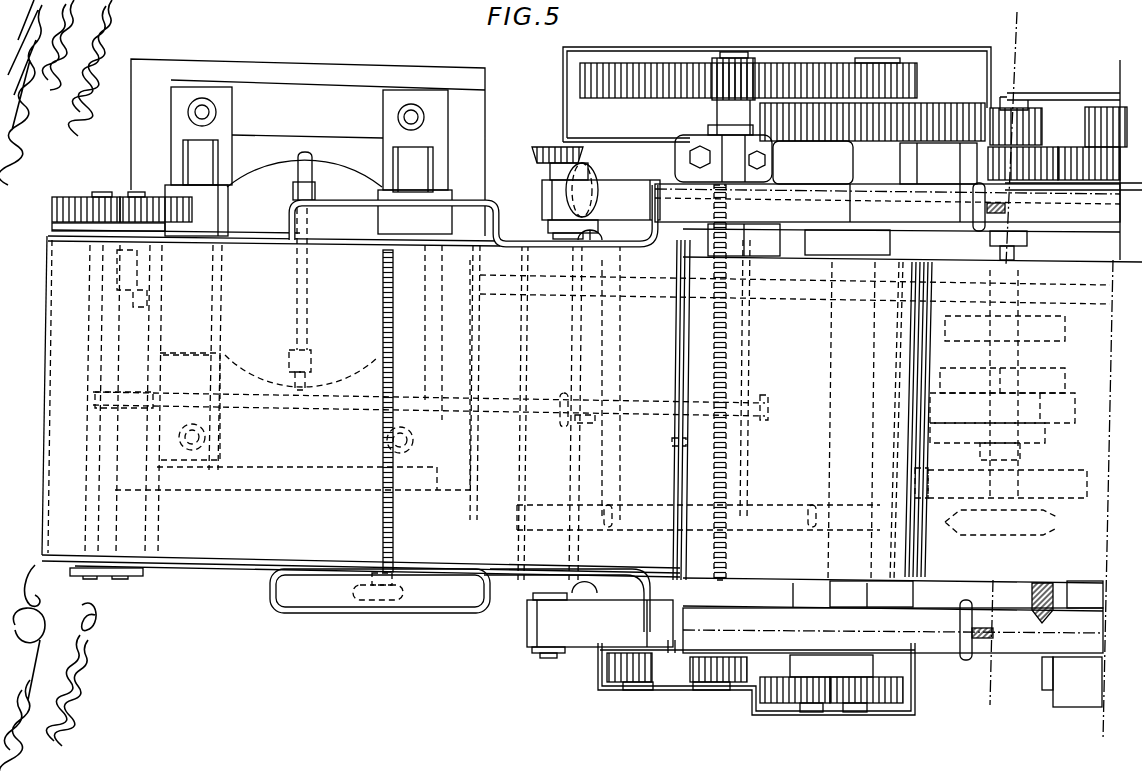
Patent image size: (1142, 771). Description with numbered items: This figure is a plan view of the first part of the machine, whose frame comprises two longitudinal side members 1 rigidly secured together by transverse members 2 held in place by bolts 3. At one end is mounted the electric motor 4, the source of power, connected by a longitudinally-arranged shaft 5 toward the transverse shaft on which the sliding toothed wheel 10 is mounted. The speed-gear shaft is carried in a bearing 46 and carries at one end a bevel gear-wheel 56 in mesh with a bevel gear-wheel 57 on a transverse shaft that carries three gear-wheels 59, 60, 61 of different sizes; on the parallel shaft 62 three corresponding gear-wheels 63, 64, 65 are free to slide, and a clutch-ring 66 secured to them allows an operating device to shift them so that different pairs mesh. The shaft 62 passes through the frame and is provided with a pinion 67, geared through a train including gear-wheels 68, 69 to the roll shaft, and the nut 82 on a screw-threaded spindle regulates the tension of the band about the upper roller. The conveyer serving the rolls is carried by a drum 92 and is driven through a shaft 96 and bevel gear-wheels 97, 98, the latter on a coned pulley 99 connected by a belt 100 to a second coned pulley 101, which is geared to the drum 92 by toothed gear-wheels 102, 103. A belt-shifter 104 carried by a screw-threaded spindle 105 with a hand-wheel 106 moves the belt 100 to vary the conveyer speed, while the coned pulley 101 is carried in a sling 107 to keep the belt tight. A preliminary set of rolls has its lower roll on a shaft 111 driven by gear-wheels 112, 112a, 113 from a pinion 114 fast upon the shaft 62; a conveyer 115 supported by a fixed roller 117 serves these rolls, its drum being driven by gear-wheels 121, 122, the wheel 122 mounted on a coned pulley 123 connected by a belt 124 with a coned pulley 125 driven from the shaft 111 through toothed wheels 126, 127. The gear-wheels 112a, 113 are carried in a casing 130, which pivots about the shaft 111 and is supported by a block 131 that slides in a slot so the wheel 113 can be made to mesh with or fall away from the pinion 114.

The longitudinal side members 1 is at (887, 418).
The transverse members 2 is at (597, 252).
The bolts 3 is at (592, 233).
The electric motor 4 is at (308, 223).
The longitudinally-arranged shaft 5 is at (657, 290).
The toothed wheel 10 is at (996, 367).
The bearing 46 is at (1085, 595).
The bevel gear-wheel 56 is at (993, 587).
The bevel gear-wheel 57 is at (967, 527).
The gear-wheel 59 is at (1053, 393).
The gear-wheel 60 is at (1062, 342).
The gear-wheel 61 is at (1007, 484).
The shaft 62 is at (1008, 358).
The gear-wheel 63 is at (1082, 397).
The gear-wheel 64 is at (1050, 372).
The gear-wheel 65 is at (1070, 427).
The clutch-ring 66 is at (1007, 470).
The pinion 67 is at (1015, 185).
The gear-wheel 68 is at (1100, 183).
The gear-wheel 69 is at (1088, 107).
The nut 82 is at (978, 230).
The drum 92 is at (765, 405).
The shaft 96 is at (805, 184).
The bevel gear-wheel 97 is at (587, 157).
The bevel gear-wheel 98 is at (537, 154).
The coned pulley 99 is at (533, 348).
The belt 100 is at (558, 525).
The coned pulley 101 is at (837, 493).
The toothed gear-wheel 102 is at (870, 712).
The toothed gear-wheel 103 is at (800, 712).
The belt-shifter 104 is at (562, 393).
The screw-threaded spindle 105 is at (380, 530).
The hand-wheel 106 is at (360, 600).
The sling 107 is at (840, 453).
The shaft 111 is at (733, 58).
The gear-wheel 112 is at (583, 80).
The gear-wheel 112a is at (917, 97).
The gear-wheel 113 is at (942, 141).
The pinion 114 is at (1027, 128).
The conveyer 115 is at (292, 398).
The knife-edge or roller 117 is at (677, 355).
The gear-wheel 121 is at (77, 197).
The gear-wheel 122 is at (154, 197).
The coned pulley 123 is at (93, 425).
The belt 124 is at (580, 420).
The coned pulley 125 is at (686, 442).
The toothed wheel 126 is at (600, 677).
The toothed wheel 127 is at (720, 690).
The casing 130 is at (923, 53).
The block or lug 131 is at (960, 187).